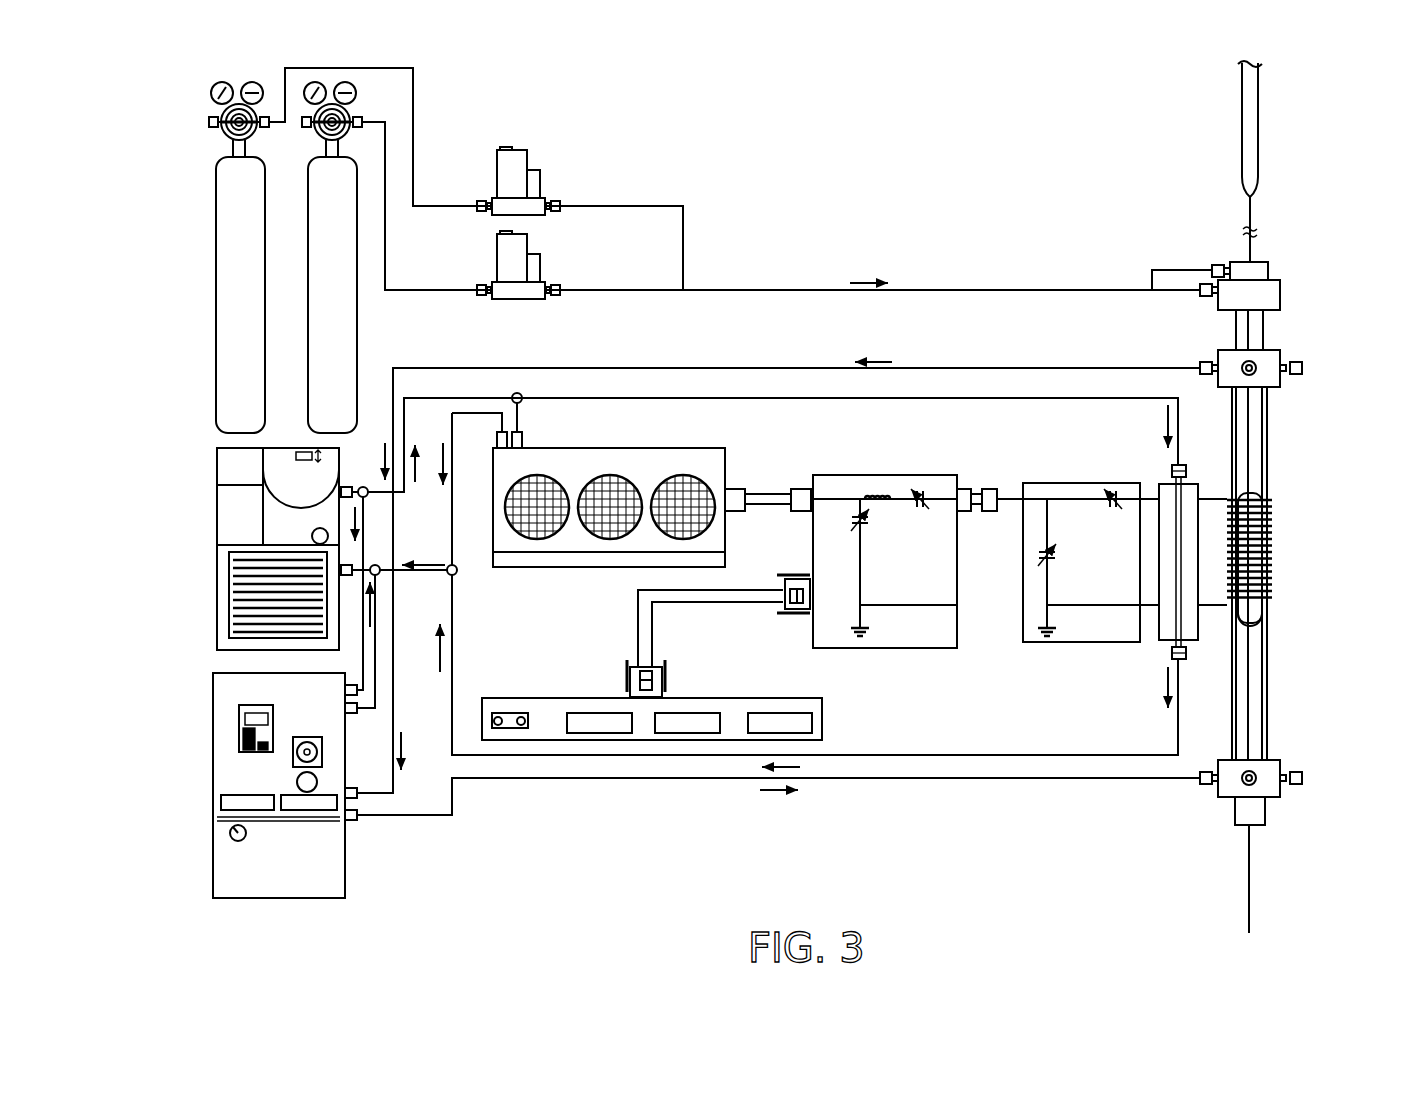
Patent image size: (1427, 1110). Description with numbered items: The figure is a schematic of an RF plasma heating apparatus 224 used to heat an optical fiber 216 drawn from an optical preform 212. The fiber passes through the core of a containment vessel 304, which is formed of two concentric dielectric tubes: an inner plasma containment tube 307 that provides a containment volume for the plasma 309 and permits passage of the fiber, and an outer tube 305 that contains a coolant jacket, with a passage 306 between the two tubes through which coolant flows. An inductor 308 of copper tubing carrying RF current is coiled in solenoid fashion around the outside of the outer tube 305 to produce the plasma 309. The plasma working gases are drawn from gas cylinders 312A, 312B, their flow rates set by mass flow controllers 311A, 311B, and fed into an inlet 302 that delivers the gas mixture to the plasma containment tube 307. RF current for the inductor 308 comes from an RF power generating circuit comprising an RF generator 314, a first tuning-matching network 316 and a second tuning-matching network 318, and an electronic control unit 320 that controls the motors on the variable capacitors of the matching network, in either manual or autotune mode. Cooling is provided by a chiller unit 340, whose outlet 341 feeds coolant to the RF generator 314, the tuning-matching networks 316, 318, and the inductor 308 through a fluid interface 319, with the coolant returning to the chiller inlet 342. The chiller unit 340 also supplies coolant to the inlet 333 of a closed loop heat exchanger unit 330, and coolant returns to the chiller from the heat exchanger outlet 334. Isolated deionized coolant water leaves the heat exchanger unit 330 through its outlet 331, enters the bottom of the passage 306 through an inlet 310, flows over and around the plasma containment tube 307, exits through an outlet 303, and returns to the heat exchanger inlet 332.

The RF plasma heating apparatus 224 is at (1066, 120).
The optical preform 212 is at (1258, 128).
The optical fiber 216 is at (1260, 209).
The inlet 302 is at (1280, 273).
The outlet 303 is at (1292, 352).
The containment vessel 304 is at (1280, 401).
The outer tube 305 is at (1268, 425).
The passage 306 is at (1268, 455).
The plasma containment tube 307 is at (1268, 483).
The inductor 308 is at (1272, 500).
The plasma 309 is at (1260, 618).
The inlet 310 is at (1292, 762).
The mass flow controller 311A is at (549, 188).
The mass flow controller 311B is at (549, 276).
The gas cylinder 312A is at (216, 334).
The gas cylinder 312B is at (357, 343).
The RF generator 314 is at (693, 448).
The first tuning-matching network 316 is at (876, 648).
The tuning-matching network 318 is at (1052, 642).
The fluid interface 319 is at (1190, 484).
The electronic control unit 320 is at (822, 715).
The heat exchanger unit 330 is at (345, 868).
The outlet 331 is at (464, 808).
The inlet 332 is at (402, 784).
The inlet 333 is at (380, 673).
The outlet 334 is at (360, 667).
The chiller unit 340 is at (217, 516).
The outlet 341 is at (343, 485).
The inlet 342 is at (347, 562).